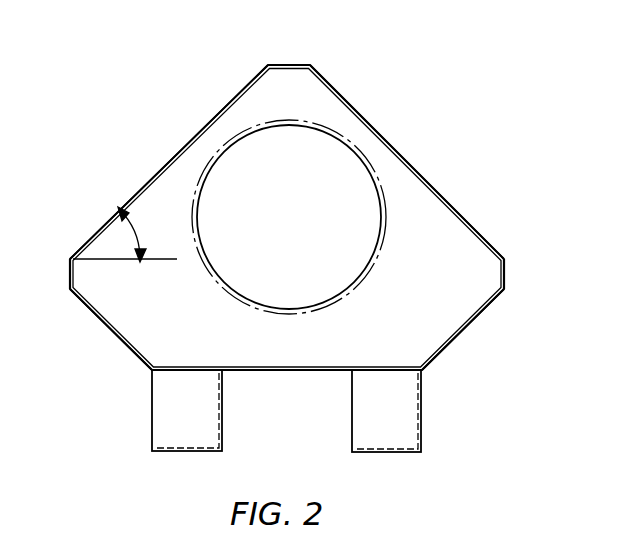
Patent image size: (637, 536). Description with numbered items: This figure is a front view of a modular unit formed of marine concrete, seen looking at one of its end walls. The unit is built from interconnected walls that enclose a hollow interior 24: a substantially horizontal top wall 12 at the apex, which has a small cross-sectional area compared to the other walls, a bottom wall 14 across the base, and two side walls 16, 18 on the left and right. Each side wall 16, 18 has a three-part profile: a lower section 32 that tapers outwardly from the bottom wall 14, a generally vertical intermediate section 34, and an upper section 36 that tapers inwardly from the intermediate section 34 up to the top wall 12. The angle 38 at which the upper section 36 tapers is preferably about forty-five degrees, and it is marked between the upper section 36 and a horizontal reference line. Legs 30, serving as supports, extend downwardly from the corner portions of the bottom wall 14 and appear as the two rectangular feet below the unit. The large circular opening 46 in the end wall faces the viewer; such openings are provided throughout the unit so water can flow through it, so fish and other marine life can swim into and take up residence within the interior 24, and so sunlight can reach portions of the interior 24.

The top wall 12 is at (290, 64).
The bottom wall 14 is at (279, 388).
The side wall 16 is at (108, 148).
The side wall 18 is at (470, 150).
The hollow interior 24 is at (294, 228).
The leg 30 is at (151, 433).
The lower section 32 is at (106, 322).
The intermediate section 34 is at (70, 272).
The upper section 36 is at (187, 144).
The angle 38 is at (134, 249).
The opening 46 is at (258, 128).